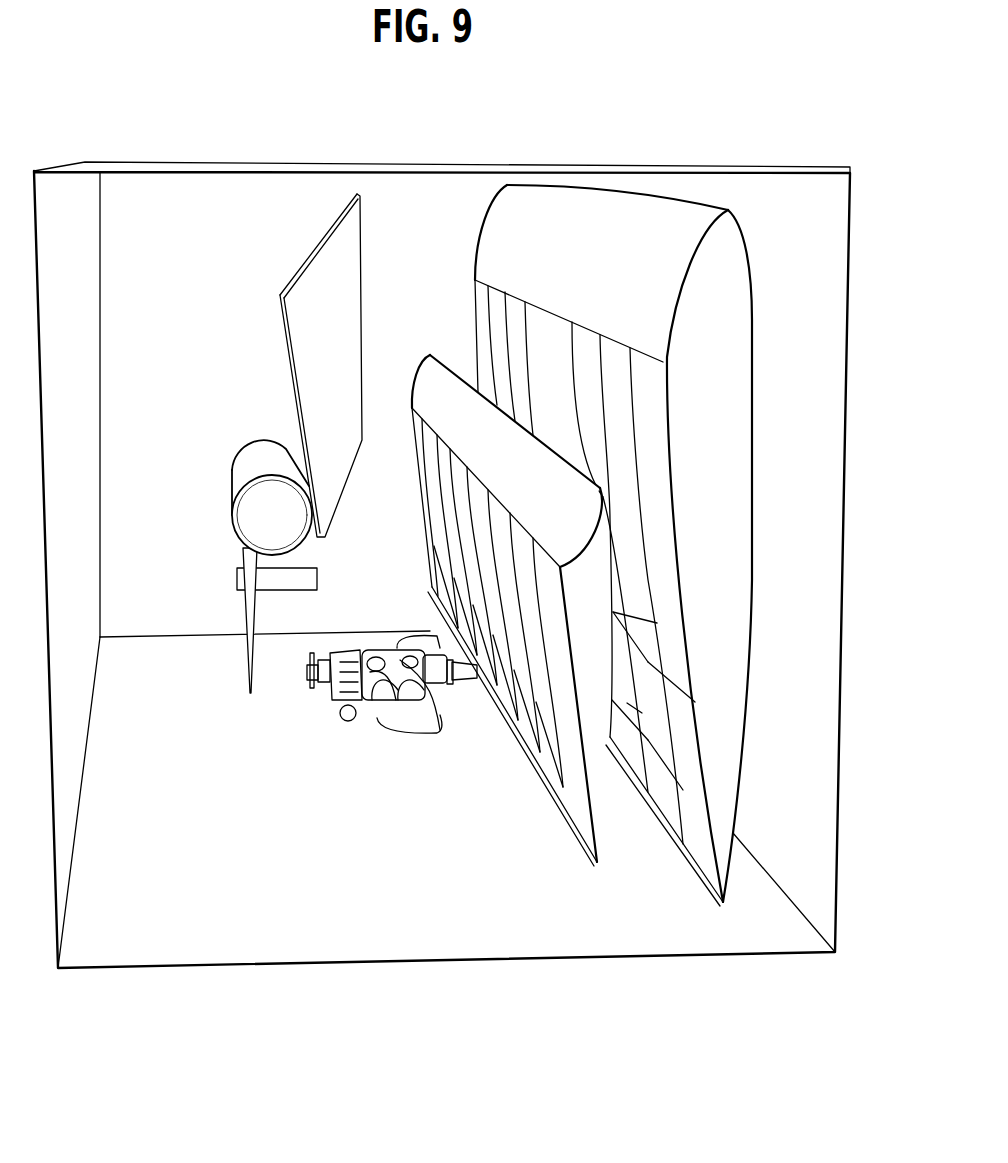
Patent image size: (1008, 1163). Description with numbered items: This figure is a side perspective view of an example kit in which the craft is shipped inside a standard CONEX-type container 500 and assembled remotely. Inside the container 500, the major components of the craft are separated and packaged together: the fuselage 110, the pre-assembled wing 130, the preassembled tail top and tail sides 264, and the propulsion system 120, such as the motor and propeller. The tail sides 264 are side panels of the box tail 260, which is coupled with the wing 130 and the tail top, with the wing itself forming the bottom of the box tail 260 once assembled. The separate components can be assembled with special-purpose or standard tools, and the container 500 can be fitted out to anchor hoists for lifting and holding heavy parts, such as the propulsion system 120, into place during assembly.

The container 500 is at (343, 166).
The tail sides 264 is at (300, 264).
The fuselage 110 is at (245, 462).
The propulsion system 120 is at (268, 710).
The pre-assembled wing 130 is at (737, 438).
The tail 260 is at (595, 632).